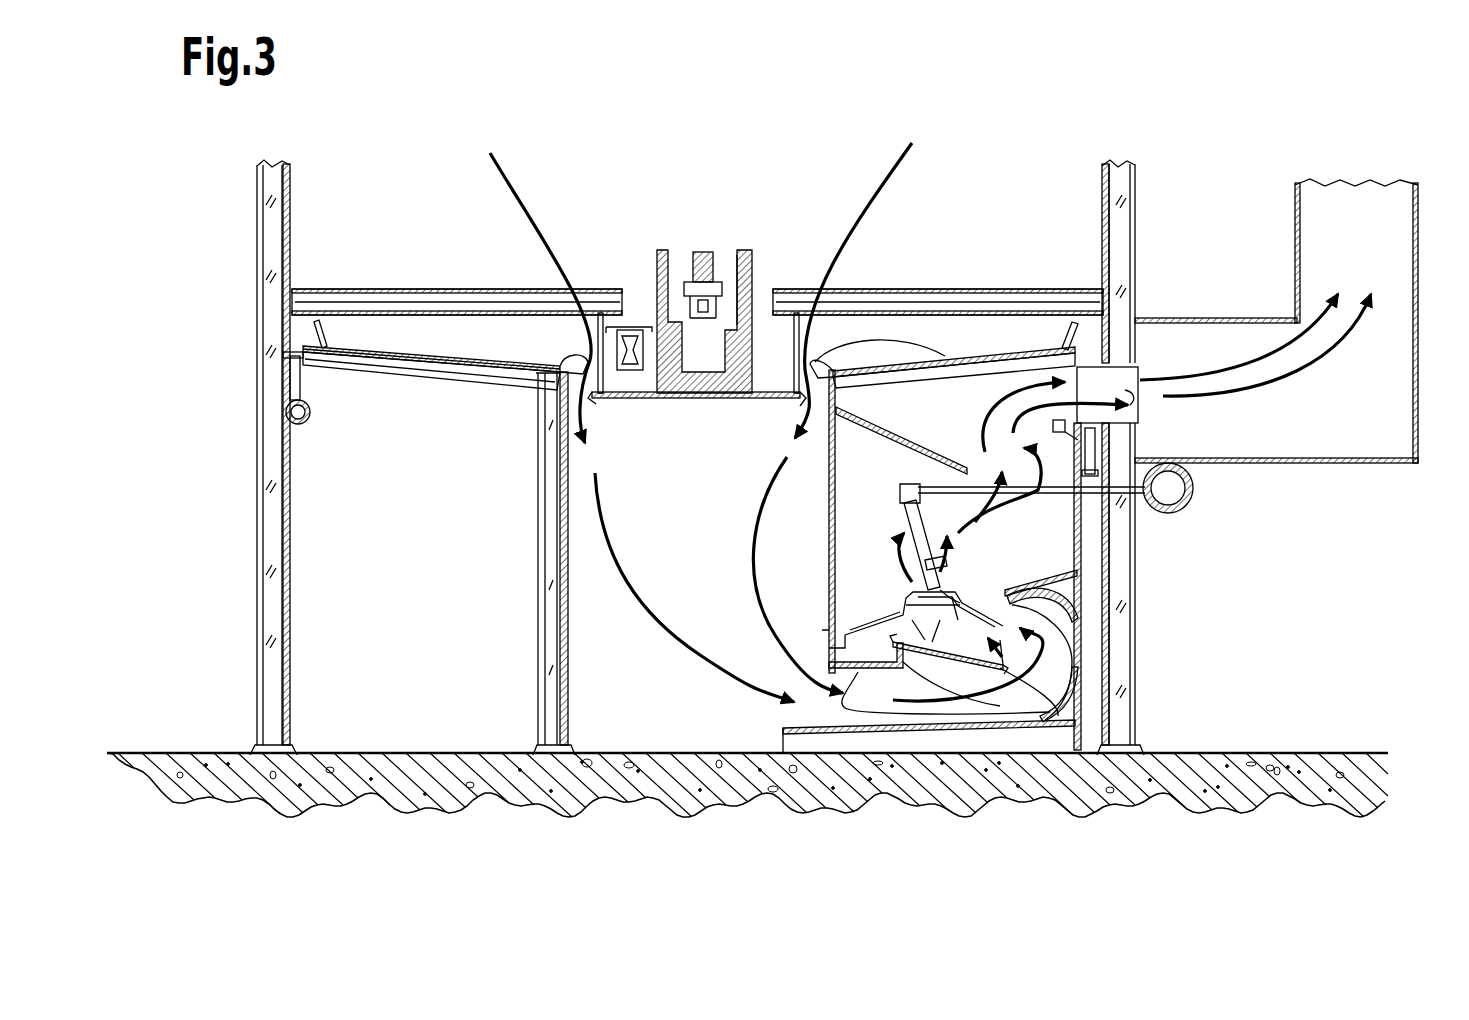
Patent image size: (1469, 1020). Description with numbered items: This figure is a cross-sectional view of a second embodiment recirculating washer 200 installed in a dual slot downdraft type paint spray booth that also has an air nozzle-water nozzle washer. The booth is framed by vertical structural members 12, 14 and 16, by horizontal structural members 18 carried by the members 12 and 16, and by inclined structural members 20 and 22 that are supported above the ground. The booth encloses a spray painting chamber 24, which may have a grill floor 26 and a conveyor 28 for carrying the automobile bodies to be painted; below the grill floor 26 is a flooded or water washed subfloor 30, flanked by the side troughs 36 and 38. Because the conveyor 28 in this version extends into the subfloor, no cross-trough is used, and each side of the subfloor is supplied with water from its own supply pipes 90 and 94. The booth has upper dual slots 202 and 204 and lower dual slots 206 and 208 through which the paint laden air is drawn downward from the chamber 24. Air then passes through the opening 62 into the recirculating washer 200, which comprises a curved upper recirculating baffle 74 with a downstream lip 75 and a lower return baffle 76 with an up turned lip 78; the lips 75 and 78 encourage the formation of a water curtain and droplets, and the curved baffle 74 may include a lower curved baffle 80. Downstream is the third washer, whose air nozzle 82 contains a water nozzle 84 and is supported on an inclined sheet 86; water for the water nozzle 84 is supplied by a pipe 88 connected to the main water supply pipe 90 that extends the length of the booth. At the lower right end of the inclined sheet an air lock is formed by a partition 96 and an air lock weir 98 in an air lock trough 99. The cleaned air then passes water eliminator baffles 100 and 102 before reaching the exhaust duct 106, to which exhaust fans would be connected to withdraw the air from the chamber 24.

The vertical structural member 12 is at (1123, 230).
The vertical structural member 14 is at (552, 532).
The vertical structural member 16 is at (256, 488).
The horizontal structural member 18 is at (503, 296).
The inclined structural member 20 is at (957, 365).
The inclined structural member 22 is at (352, 352).
The spray painting chamber 24 is at (668, 205).
The grill floor 26 is at (383, 296).
The conveyor 28 is at (752, 262).
The subfloor 30 is at (460, 345).
The side trough 36 is at (300, 338).
The side trough 38 is at (1092, 336).
The opening 62 is at (845, 674).
The first recirculating baffle 74 is at (1078, 576).
The downstream lip 75 is at (1082, 620).
The second recirculating baffle 76 is at (952, 656).
The up turned lip 78 is at (1003, 670).
The lower curved baffle 80 is at (1082, 698).
The air nozzle 82 is at (958, 583).
The water nozzle 84 is at (910, 600).
The inclined sheet 86 is at (882, 622).
The pipe 88 is at (905, 508).
The main water supply pipe 90 is at (310, 412).
The connecting pipe 94 is at (295, 382).
The partition 96 is at (858, 672).
The air lock weir 98 is at (903, 660).
The air lock trough 99 is at (873, 652).
The water eliminator baffle 100 is at (890, 427).
The water eliminator baffle 102 is at (1056, 416).
The exhaust duct 106 is at (1135, 372).
The recirculating washer 200 is at (1157, 605).
The upper dual slot 202 is at (540, 373).
The upper dual slot 204 is at (930, 378).
The lower dual slot 206 is at (590, 405).
The lower dual slot 208 is at (792, 405).